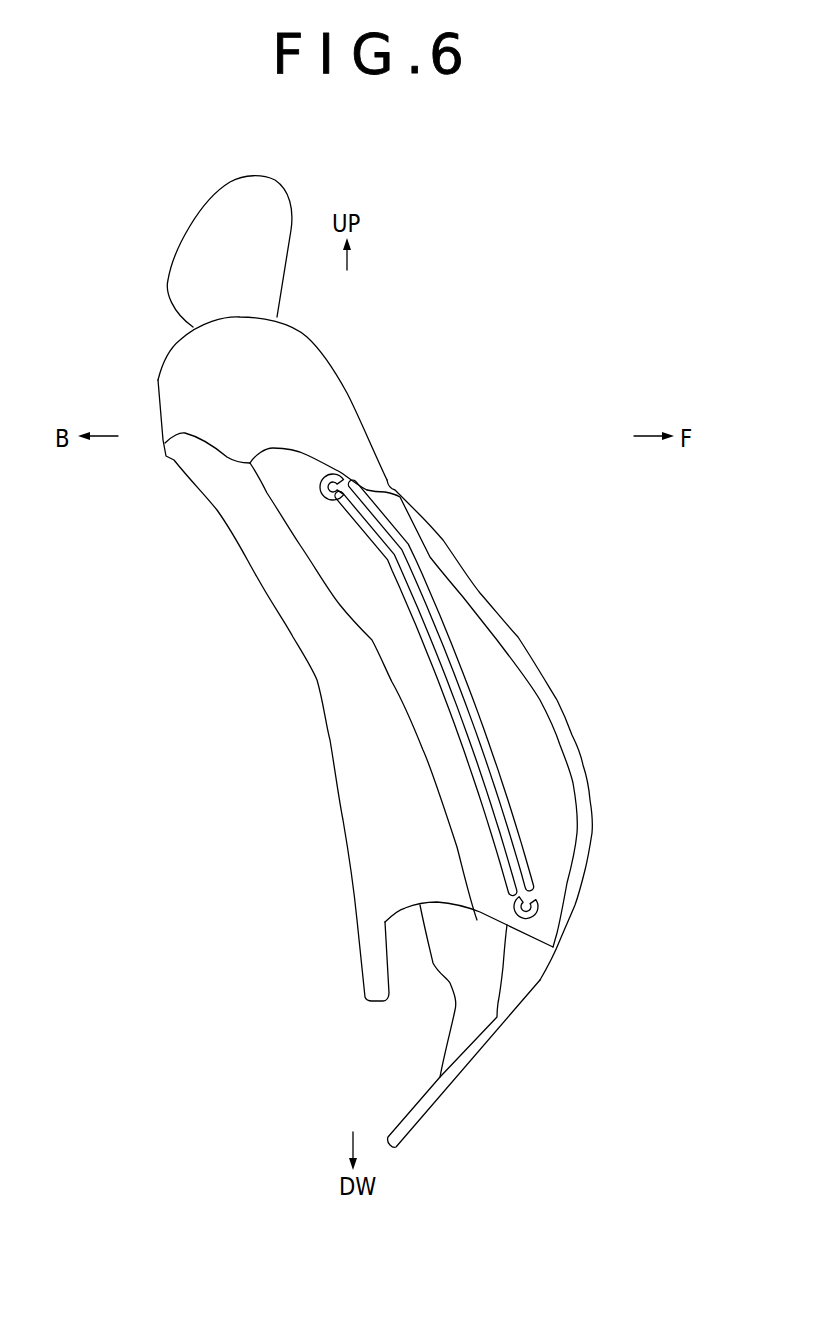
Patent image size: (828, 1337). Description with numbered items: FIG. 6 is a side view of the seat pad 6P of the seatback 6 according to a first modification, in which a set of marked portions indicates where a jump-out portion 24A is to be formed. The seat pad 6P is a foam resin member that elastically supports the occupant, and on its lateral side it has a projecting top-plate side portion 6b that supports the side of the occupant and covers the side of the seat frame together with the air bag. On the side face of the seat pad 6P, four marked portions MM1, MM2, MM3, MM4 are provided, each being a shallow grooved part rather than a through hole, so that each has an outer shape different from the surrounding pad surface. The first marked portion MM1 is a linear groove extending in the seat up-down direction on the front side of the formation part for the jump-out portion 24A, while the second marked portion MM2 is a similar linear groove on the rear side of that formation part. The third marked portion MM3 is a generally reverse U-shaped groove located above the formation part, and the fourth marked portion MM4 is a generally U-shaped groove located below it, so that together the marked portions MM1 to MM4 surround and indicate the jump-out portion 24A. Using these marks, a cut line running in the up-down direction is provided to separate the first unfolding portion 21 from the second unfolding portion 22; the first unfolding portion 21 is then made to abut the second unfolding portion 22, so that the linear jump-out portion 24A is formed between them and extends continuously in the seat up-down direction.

The seatback 6 is at (370, 662).
The seat pad 6P is at (370, 662).
The top-plate side portion 6b is at (518, 637).
The first marked portion MM1 is at (482, 743).
The second marked portion MM2 is at (438, 681).
The third marked portion MM3 is at (321, 485).
The fourth marked portion MM4 is at (536, 912).
The first unfolding portion 21 is at (401, 563).
The second unfolding portion 22 is at (416, 608).
The jump-out portion 24A is at (364, 519).